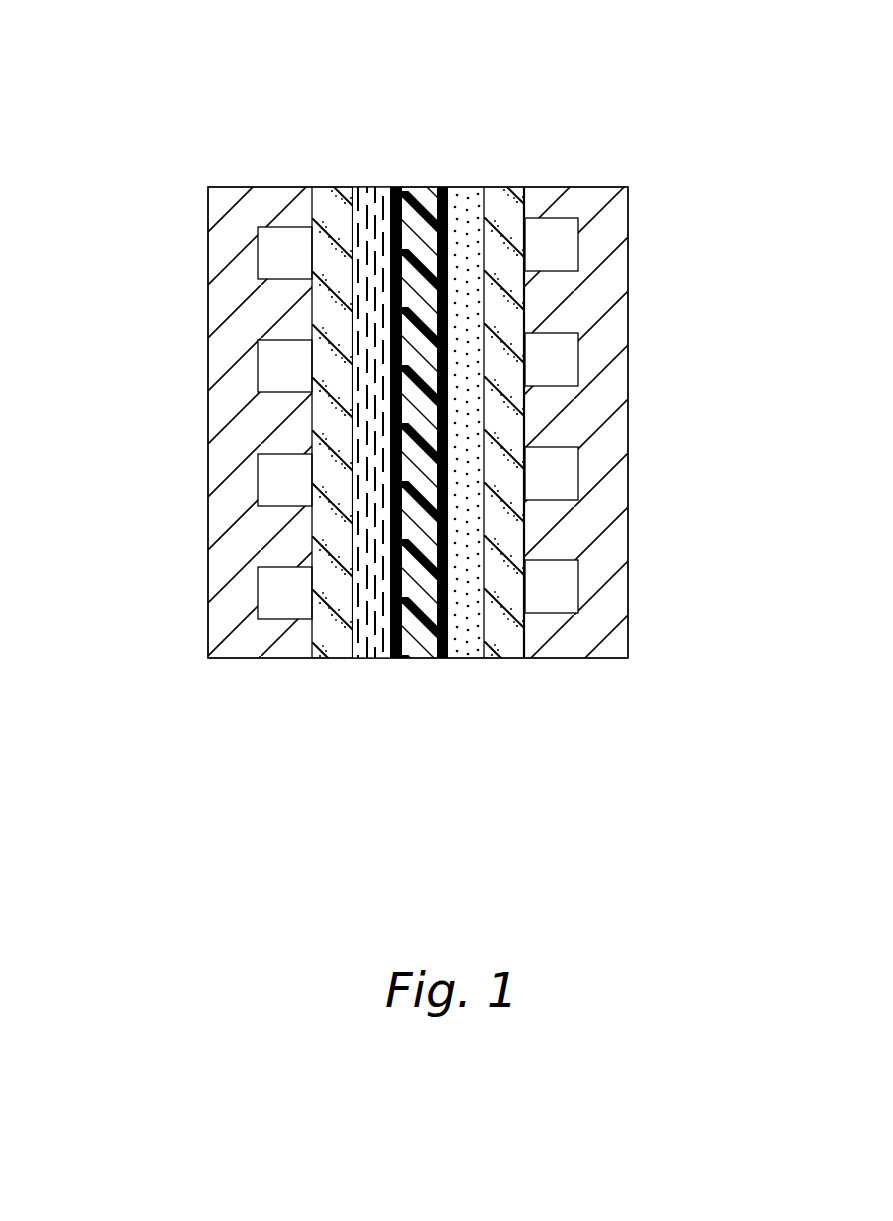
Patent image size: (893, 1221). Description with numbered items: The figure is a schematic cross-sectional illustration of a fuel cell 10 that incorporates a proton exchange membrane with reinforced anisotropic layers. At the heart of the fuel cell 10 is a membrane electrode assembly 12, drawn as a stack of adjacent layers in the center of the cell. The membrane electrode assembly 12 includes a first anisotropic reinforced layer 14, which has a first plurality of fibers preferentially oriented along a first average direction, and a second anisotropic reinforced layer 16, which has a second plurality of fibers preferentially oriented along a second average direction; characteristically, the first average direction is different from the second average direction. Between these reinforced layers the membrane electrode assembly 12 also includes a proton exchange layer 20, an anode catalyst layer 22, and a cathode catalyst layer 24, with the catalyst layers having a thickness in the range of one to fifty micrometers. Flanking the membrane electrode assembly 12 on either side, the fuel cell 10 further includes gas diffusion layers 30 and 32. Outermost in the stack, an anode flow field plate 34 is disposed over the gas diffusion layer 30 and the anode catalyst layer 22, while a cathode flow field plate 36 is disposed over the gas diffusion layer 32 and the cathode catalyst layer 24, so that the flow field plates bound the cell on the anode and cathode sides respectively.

The fuel cell 10 is at (185, 102).
The membrane electrode assembly 12 is at (352, 187).
The first anisotropic reinforced layer 14 is at (370, 660).
The second anisotropic reinforced layer 16 is at (465, 660).
The proton exchange layer 20 is at (415, 660).
The anode catalyst layer 22 is at (395, 660).
The cathode catalyst layer 24 is at (443, 660).
The gas diffusion layer 30 is at (337, 187).
The gas diffusion layer 32 is at (500, 187).
The anode flow field plate 34 is at (233, 246).
The cathode flow field plate 36 is at (625, 218).